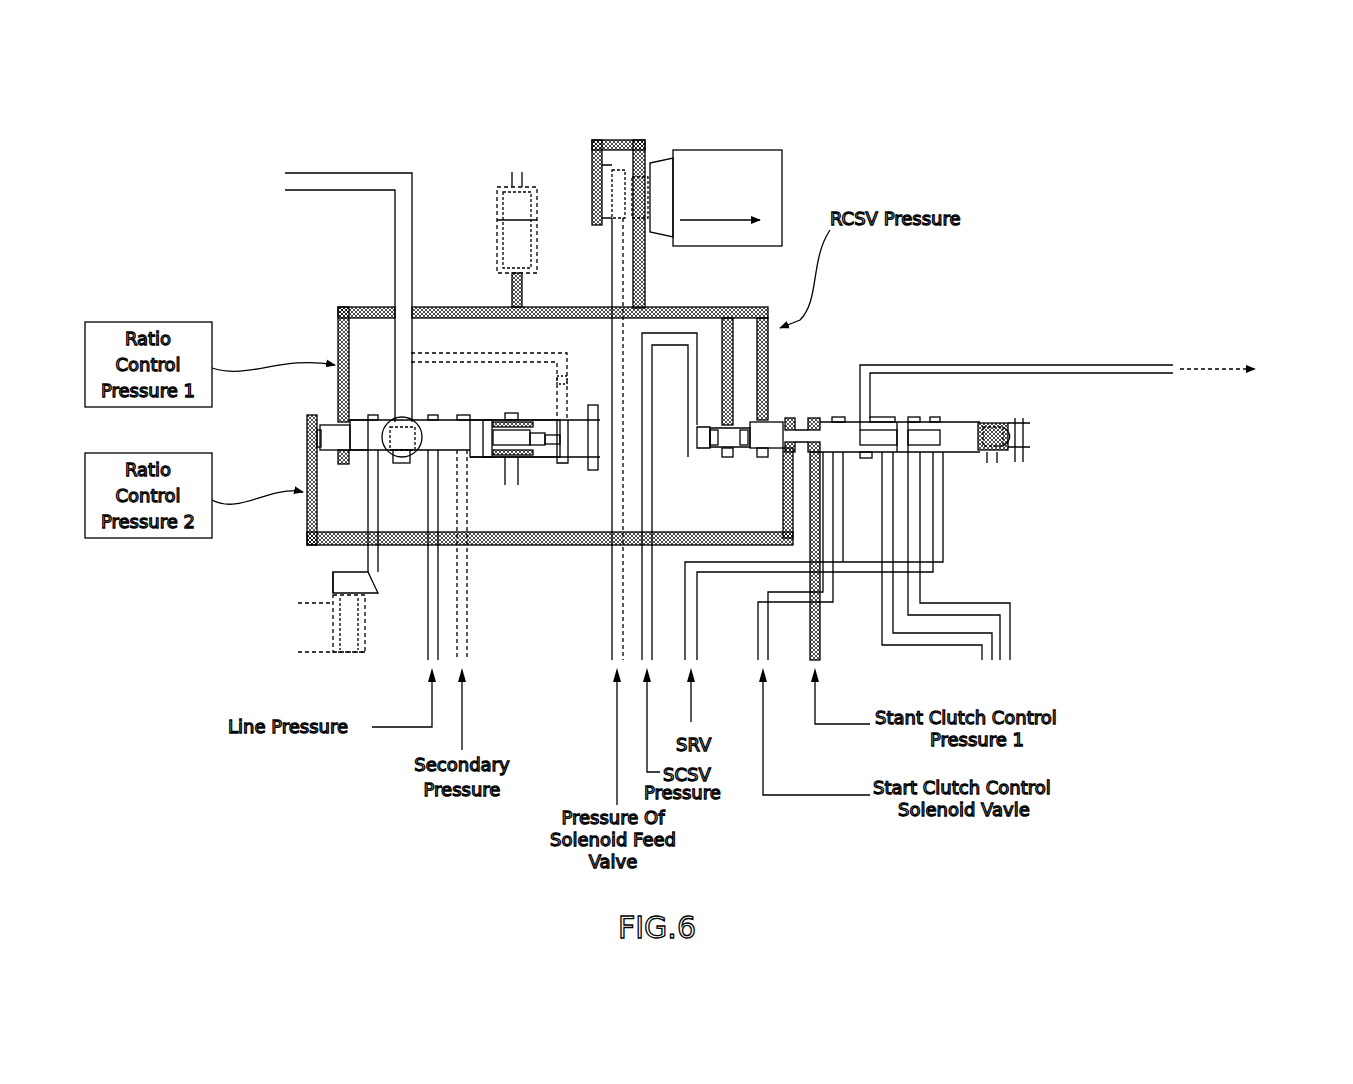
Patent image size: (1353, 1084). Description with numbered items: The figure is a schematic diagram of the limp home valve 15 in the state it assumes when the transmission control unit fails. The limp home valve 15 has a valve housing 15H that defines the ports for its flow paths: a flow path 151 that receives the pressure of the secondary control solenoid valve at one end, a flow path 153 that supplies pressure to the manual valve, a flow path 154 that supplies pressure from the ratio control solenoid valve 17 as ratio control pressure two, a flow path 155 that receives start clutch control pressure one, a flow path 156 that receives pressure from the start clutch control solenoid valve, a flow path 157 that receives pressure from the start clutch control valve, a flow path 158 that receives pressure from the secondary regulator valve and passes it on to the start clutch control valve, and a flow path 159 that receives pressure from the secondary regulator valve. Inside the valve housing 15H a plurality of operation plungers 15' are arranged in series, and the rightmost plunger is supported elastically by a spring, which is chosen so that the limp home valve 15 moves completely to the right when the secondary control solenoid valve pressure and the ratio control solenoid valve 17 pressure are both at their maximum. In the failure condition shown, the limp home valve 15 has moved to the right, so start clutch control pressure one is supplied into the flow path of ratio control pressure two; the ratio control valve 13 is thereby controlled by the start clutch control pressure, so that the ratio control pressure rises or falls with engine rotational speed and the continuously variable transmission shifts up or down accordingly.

The ratio control valve 13 is at (507, 393).
The ratio control solenoid valve 17 is at (733, 150).
The limp home valve 15 is at (838, 359).
The operation plungers 15' is at (874, 382).
The valve housing 15H is at (938, 417).
The flow path 151 is at (647, 575).
The flow path 153 is at (1042, 365).
The flow path 154 is at (785, 511).
The flow path 155 is at (797, 468).
The flow path 156 is at (840, 593).
The flow path 157 is at (890, 522).
The flow path 158 is at (913, 551).
The flow path 159 is at (938, 492).